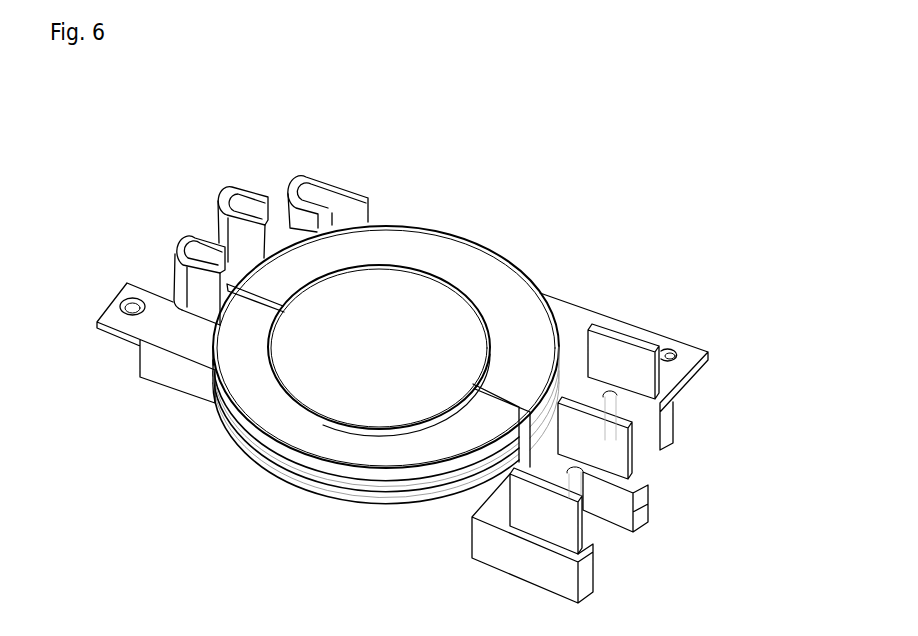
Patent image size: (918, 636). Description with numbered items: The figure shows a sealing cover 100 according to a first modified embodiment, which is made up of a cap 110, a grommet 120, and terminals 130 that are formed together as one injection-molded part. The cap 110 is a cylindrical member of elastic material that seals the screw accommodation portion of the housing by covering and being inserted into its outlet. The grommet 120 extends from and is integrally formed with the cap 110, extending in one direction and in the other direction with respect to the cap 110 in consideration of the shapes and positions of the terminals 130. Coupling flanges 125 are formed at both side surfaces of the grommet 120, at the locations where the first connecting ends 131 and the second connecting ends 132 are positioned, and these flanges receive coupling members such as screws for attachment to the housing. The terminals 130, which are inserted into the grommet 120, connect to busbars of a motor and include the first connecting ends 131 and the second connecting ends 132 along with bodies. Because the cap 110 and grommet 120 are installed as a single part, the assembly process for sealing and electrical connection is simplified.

The sealing cover 100 is at (589, 122).
The cap 110 is at (473, 238).
The grommet 120 is at (569, 317).
The coupling flange 125 is at (123, 297).
The terminal 130 is at (462, 365).
The first connecting end 131 is at (222, 194).
The second connecting end 132 is at (634, 452).